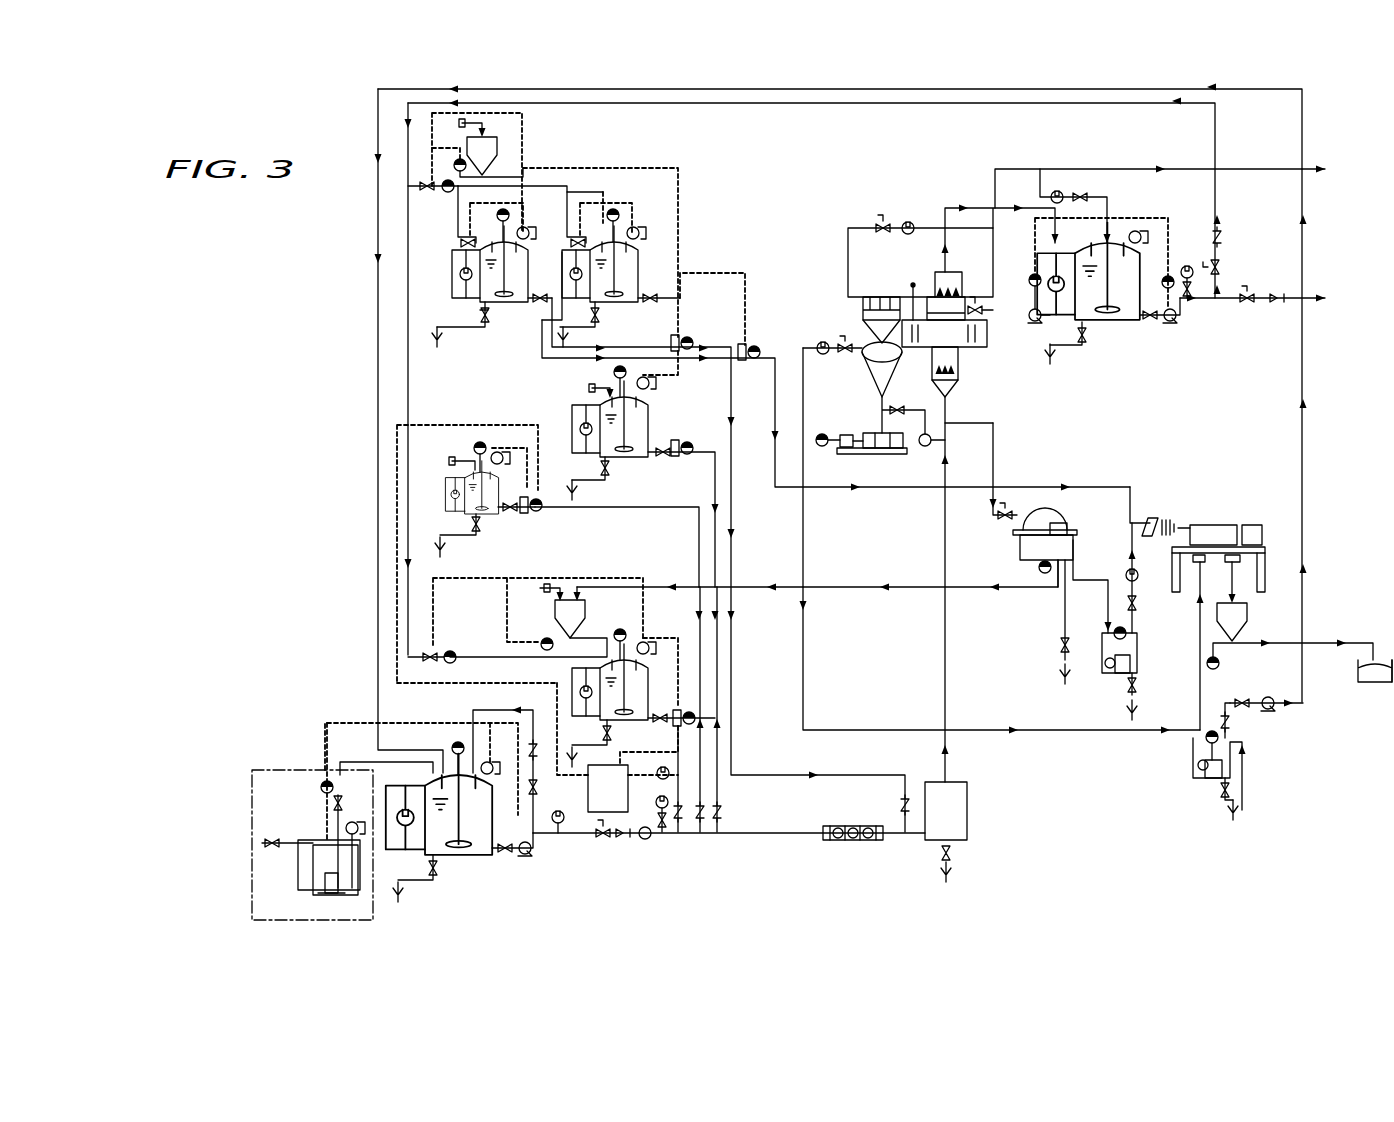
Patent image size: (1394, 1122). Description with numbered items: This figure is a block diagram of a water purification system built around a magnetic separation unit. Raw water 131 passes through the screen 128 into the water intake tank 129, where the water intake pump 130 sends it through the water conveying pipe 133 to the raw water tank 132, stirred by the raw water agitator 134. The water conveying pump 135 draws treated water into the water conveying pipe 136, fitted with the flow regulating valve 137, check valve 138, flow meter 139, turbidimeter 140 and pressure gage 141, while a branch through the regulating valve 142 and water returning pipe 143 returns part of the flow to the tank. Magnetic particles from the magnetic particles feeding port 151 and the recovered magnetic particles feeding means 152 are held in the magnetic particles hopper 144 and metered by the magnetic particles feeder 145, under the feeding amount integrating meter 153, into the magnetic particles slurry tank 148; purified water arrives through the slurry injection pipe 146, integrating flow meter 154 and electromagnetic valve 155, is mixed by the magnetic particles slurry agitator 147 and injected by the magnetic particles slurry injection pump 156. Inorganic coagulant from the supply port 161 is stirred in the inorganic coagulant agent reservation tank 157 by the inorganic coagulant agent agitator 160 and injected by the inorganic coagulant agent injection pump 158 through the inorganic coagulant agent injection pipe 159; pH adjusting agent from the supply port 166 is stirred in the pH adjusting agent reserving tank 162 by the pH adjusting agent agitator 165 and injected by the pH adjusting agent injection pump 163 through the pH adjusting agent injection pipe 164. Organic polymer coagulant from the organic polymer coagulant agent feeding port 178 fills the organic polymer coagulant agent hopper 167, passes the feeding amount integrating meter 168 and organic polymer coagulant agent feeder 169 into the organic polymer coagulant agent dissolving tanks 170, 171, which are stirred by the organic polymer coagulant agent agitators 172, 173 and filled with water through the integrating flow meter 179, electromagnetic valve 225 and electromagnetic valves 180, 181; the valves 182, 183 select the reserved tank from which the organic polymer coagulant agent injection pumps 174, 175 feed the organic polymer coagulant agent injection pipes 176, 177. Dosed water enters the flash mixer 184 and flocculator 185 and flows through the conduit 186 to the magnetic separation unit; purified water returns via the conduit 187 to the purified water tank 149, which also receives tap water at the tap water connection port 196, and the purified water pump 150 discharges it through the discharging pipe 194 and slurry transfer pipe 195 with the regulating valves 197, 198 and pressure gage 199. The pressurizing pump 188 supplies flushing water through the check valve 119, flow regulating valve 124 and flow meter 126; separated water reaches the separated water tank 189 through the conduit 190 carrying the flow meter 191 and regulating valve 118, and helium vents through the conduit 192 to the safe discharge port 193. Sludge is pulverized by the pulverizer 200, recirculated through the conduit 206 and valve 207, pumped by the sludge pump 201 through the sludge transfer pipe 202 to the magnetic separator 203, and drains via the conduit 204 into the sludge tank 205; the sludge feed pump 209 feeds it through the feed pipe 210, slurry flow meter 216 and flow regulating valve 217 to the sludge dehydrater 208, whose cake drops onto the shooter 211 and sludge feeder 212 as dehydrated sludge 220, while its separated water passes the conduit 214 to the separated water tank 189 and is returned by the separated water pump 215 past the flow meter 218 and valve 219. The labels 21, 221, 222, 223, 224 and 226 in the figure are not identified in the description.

The product 21 is at (1390, 684).
The regulating valve 118 is at (842, 340).
The check valve 119 is at (868, 236).
The flow regulating valve 124 is at (882, 222).
The flow meter 126 is at (908, 222).
The screen 128 is at (305, 840).
The water intake tank 129 is at (335, 830).
The water intake pump 130 is at (325, 888).
The raw water 131 is at (252, 866).
The raw water tank 132 is at (458, 855).
The water conveying pipe 133 is at (360, 760).
The raw water agitator 134 is at (327, 780).
The water conveying pump 135 is at (525, 858).
The water conveying pipe 136 is at (556, 838).
The flow regulating valve 137 is at (604, 840).
The check valve 138 is at (623, 840).
The flow meter 139 is at (646, 840).
The turbidimeter 140 is at (570, 838).
The pressure gage 141 is at (680, 830).
The regulating valve 142 is at (557, 745).
The water returning pipe 143 is at (473, 710).
The magnetic particles hopper 144 is at (570, 615).
The magnetic particles feeder 145 is at (645, 630).
The slurry injection pipe 146 is at (397, 683).
The magnetic particles slurry agitator 147 is at (632, 682).
The magnetic particles slurry tank 148 is at (640, 750).
The purified water tank 149 is at (1115, 325).
The purified water pump 150 is at (1172, 325).
The magnetic particles feeding port 151 is at (480, 580).
The recovered magnetic particles feeding means 152 is at (868, 590).
The feeding amount integrating meter 153 is at (545, 637).
The integrating flow meter 154 is at (430, 650).
The electromagnetic valve 155 is at (450, 662).
The magnetic particles slurry injection pump 156 is at (628, 672).
The inorganic coagulant agent reservation tank 157 is at (490, 512).
The inorganic coagulant agent injection pump 158 is at (530, 513).
The inorganic coagulant agent injection pipe 159 is at (590, 510).
The inorganic coagulant agent agitator 160 is at (397, 500).
The supply port 161 is at (450, 461).
The pH adjusting agent reserving tank 162 is at (622, 455).
The pH adjusting agent injection pump 163 is at (680, 458).
The pH adjusting agent injection pipe 164 is at (731, 525).
The pH adjusting agent agitator 165 is at (614, 375).
The supply port 166 is at (592, 392).
The organic polymer coagulant agent hopper 167 is at (495, 145).
The feeding amount integrating meter 168 is at (378, 158).
The organic polymer coagulant agent feeder 169 is at (497, 160).
The organic polymer coagulant agent dissolving tank 170 is at (487, 322).
The organic polymer coagulant agent dissolving tank 171 is at (615, 312).
The organic polymer coagulant agent agitator 172 is at (480, 290).
The organic polymer coagulant agent agitator 173 is at (630, 262).
The organic polymer coagulant agent injection pump 174 is at (686, 352).
The organic polymer coagulant agent injection pump 175 is at (750, 362).
The organic polymer coagulant agent injection pipe 176 is at (470, 258).
The organic polymer coagulant agent injection pipe 177 is at (572, 190).
The organic polymer coagulant agent feeding port 178 is at (408, 124).
The integrating flow meter 179 is at (462, 238).
The electromagnetic valve 180 is at (500, 235).
The electromagnetic valve 181 is at (640, 212).
The valve 182 is at (540, 305).
The valve 183 is at (680, 290).
The flash mixer 184 is at (862, 842).
The flocculator 185 is at (967, 808).
The conduit 186 is at (945, 668).
The conduit 187 is at (962, 206).
The pressurizing pump 188 is at (1033, 325).
The separated water tank 189 is at (1193, 760).
The conduit 190 is at (803, 676).
The flow meter 191 is at (823, 356).
The conduit 192 is at (1078, 168).
The safe discharge port 193 is at (1320, 168).
The discharging pipe 194 is at (1310, 300).
The slurry transfer pipe 195 is at (1215, 125).
The tap water connection port 196 is at (1040, 190).
The regulating valve 197 is at (1247, 306).
The regulating valve 198 is at (1222, 267).
The pressure gage 199 is at (1188, 266).
The pulverizer 200 is at (888, 440).
The sludge pump 201 is at (922, 447).
The sludge transfer pipe 202 is at (993, 440).
The magnetic separator 203 is at (1020, 548).
The conduit 204 is at (1108, 580).
The sludge tank 205 is at (1065, 640).
The conduit 206 is at (945, 423).
The valve 207 is at (947, 378).
The sludge dehydrater 208 is at (1218, 524).
The sludge feed pump 209 is at (1112, 680).
The feed pipe 210 is at (1132, 540).
The shooter 211 is at (1248, 612).
The sludge feeder 212 is at (1220, 655).
The conduit 214 is at (1200, 650).
The separated water pump 215 is at (1212, 780).
The slurry flow meter 216 is at (1152, 518).
The flow regulating valve 217 is at (1138, 603).
The flow meter 218 is at (1272, 710).
The valve 219 is at (1243, 710).
The dehydrated sludge 220 is at (1365, 684).
The line 221 is at (680, 778).
The line 222 is at (678, 802).
The pump 223 is at (690, 718).
The controller 224 is at (608, 788).
The electromagnetic valve 225 is at (427, 186).
The line 226 is at (1303, 490).